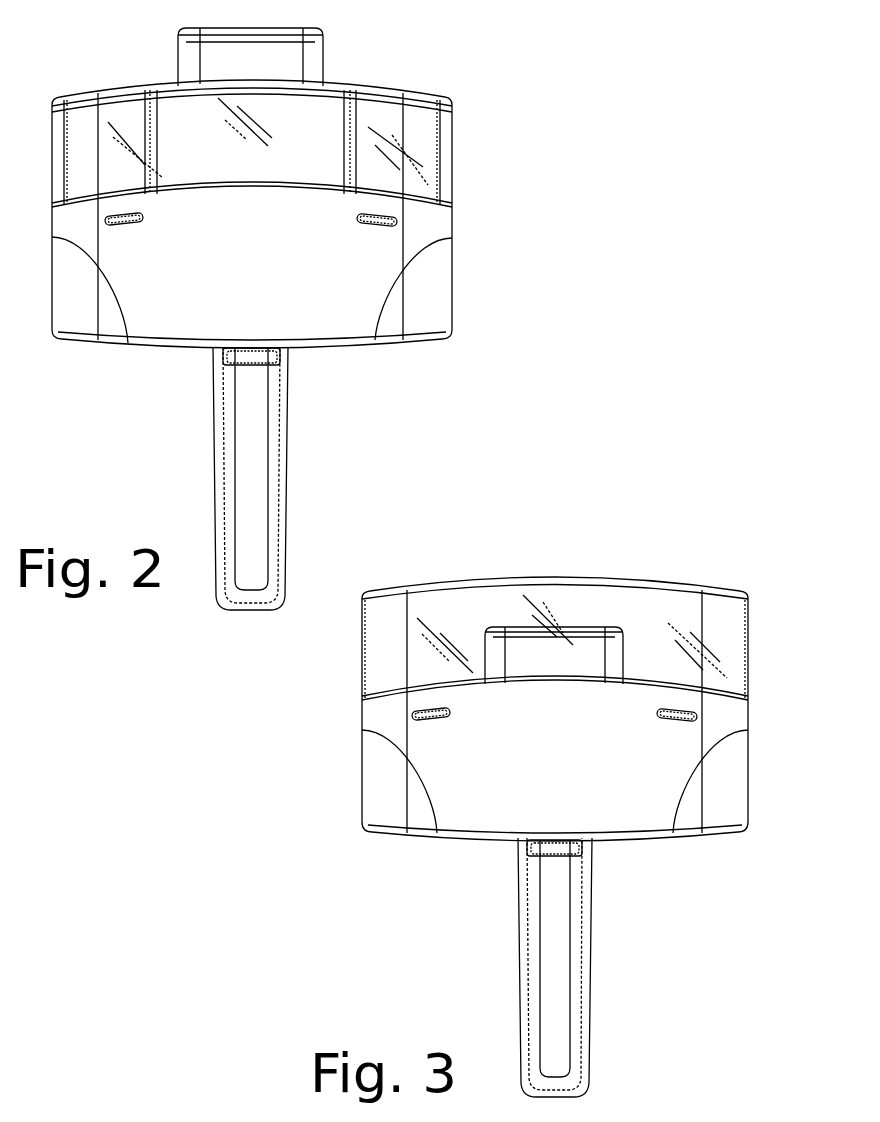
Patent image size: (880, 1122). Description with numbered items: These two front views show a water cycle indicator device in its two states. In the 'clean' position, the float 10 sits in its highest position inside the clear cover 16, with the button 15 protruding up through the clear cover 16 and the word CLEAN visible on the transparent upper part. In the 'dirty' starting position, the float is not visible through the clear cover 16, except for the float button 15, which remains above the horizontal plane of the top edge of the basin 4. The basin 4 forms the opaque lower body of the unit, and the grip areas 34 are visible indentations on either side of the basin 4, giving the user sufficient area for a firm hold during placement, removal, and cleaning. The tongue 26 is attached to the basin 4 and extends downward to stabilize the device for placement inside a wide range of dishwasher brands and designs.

In FIG. 2, the float 10 is at (440, 122).
In FIG. 2, the button 15 is at (323, 53).
In FIG. 3, the button 15 is at (590, 627).
In FIG. 2, the clear cover 16 is at (452, 165).
In FIG. 3, the clear cover 16 is at (750, 643).
In FIG. 2, the basin 4 is at (452, 221).
In FIG. 3, the basin 4 is at (750, 714).
In FIG. 2, the grip areas 34 is at (436, 289).
In FIG. 3, the grip areas 34 is at (733, 782).
In FIG. 2, the tongue 26 is at (290, 433).
In FIG. 3, the tongue 26 is at (594, 937).